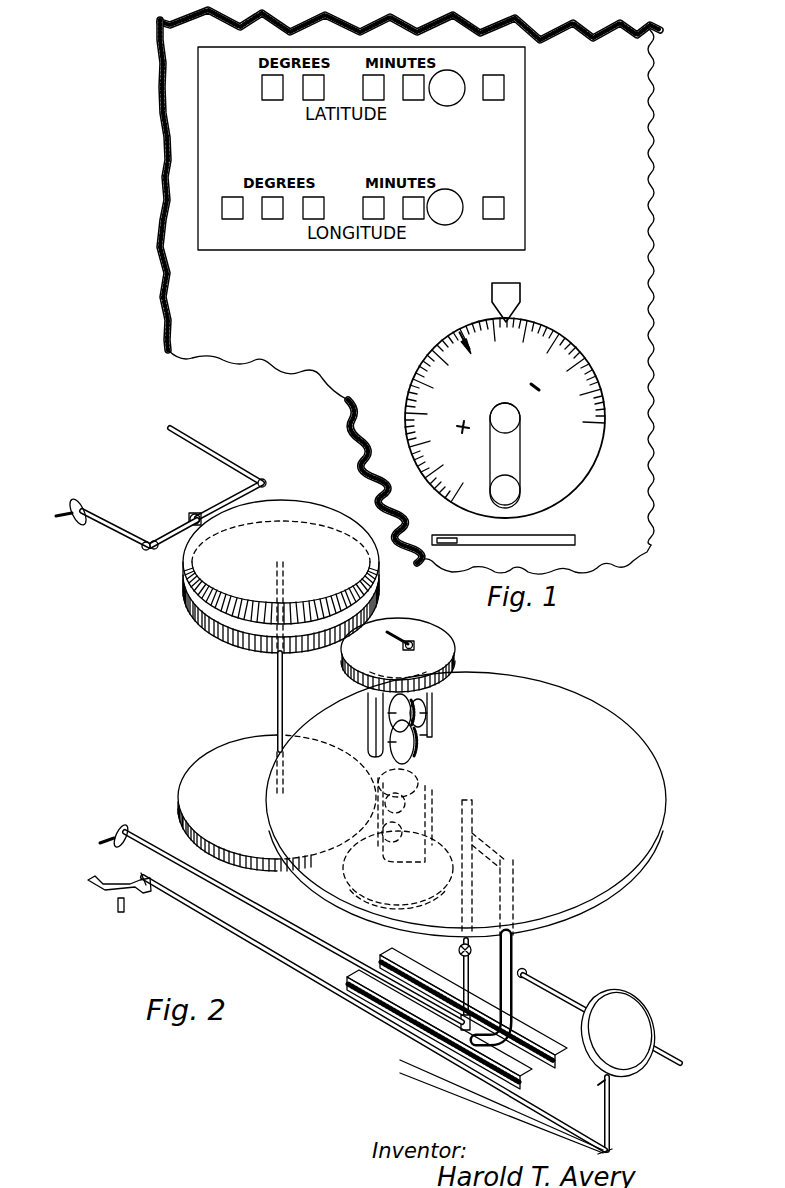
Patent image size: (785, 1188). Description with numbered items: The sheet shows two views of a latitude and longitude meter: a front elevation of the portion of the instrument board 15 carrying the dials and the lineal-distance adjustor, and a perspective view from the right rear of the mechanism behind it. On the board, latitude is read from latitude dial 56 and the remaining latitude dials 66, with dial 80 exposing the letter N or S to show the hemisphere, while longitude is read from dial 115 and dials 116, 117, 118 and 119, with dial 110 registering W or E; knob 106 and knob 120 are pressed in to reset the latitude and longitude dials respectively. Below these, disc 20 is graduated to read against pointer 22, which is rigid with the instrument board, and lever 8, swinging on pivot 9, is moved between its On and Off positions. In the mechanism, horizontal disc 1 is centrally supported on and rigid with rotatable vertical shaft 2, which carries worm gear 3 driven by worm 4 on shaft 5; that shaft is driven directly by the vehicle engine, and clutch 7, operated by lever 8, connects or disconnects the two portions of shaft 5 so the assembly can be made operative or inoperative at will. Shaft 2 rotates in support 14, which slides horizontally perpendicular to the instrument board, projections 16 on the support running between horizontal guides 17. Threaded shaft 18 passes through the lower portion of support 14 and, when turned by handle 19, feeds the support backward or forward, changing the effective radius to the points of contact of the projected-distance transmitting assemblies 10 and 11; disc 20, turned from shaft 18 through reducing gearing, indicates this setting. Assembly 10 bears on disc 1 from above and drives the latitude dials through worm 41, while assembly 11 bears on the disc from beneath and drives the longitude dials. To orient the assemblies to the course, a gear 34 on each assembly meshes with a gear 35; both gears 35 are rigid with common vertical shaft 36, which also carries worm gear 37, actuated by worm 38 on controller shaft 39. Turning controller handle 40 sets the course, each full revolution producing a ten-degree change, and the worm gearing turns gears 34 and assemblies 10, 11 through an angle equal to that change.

In FIG. 2, the horizontal disc 1 is at (613, 718).
In FIG. 2, the vertical shaft 2 is at (470, 988).
In FIG. 2, the worm gear 3 is at (459, 953).
In FIG. 2, the worm 4 is at (526, 967).
In FIG. 2, the shaft 5 is at (555, 992).
In FIG. 2, the clutch 7 is at (647, 998).
In FIG. 1, the lever 8 is at (450, 544).
In FIG. 2, the lever 8 is at (86, 888).
In FIG. 2, the pivot 9 is at (126, 910).
In FIG. 2, the projected-distance transmitting assembly 10 is at (432, 722).
In FIG. 2, the projected-distance transmitting assembly 11 is at (425, 797).
In FIG. 2, the support 14 is at (513, 1000).
In FIG. 1, the instrument board 15 is at (162, 278).
In FIG. 2, the projections 16 is at (437, 1057).
In FIG. 2, the horizontal guides 17 is at (570, 1055).
In FIG. 1, the threaded shaft 18 is at (519, 422).
In FIG. 2, the threaded shaft 18 is at (238, 897).
In FIG. 1, the handle 19 is at (519, 488).
In FIG. 2, the handle 19 is at (108, 835).
In FIG. 1, the disc 20 is at (420, 371).
In FIG. 1, the pointer 22 is at (515, 305).
In FIG. 2, the gear 34 is at (452, 642).
In FIG. 2, the gear 35 is at (186, 613).
In FIG. 2, the vertical shaft 36 is at (277, 688).
In FIG. 2, the worm gear 37 is at (300, 503).
In FIG. 2, the worm 38 is at (192, 516).
In FIG. 2, the controller shaft 39 is at (232, 498).
In FIG. 2, the controller handle 40 is at (57, 522).
In FIG. 2, the worm 41 is at (392, 648).
In FIG. 1, the latitude dial 56 is at (416, 100).
In FIG. 1, the latitude dials 66 is at (265, 100).
In FIG. 1, the dial 80 is at (504, 95).
In FIG. 1, the knob 106 is at (452, 72).
In FIG. 1, the dial 110 is at (504, 215).
In FIG. 1, the dial 115 is at (417, 219).
In FIG. 1, the dial 116 is at (363, 208).
In FIG. 1, the dial 117 is at (316, 198).
In FIG. 1, the dial 118 is at (282, 219).
In FIG. 1, the dial 119 is at (242, 219).
In FIG. 1, the knob 120 is at (450, 192).